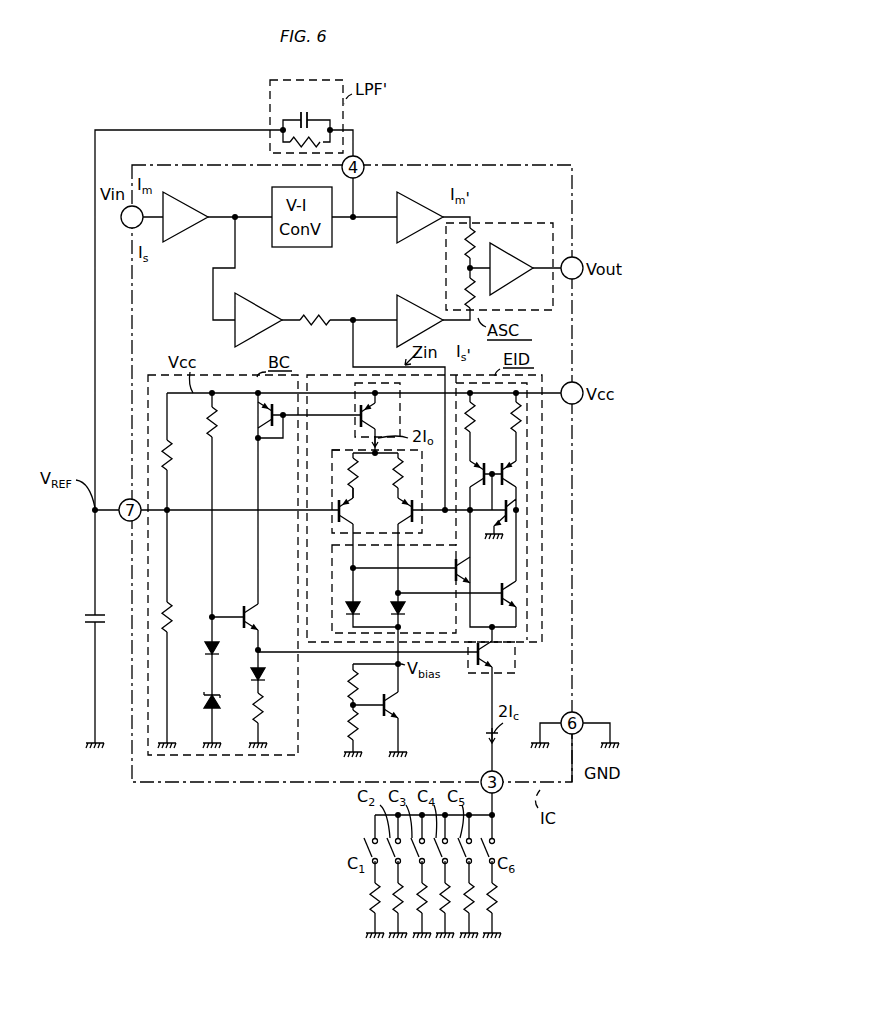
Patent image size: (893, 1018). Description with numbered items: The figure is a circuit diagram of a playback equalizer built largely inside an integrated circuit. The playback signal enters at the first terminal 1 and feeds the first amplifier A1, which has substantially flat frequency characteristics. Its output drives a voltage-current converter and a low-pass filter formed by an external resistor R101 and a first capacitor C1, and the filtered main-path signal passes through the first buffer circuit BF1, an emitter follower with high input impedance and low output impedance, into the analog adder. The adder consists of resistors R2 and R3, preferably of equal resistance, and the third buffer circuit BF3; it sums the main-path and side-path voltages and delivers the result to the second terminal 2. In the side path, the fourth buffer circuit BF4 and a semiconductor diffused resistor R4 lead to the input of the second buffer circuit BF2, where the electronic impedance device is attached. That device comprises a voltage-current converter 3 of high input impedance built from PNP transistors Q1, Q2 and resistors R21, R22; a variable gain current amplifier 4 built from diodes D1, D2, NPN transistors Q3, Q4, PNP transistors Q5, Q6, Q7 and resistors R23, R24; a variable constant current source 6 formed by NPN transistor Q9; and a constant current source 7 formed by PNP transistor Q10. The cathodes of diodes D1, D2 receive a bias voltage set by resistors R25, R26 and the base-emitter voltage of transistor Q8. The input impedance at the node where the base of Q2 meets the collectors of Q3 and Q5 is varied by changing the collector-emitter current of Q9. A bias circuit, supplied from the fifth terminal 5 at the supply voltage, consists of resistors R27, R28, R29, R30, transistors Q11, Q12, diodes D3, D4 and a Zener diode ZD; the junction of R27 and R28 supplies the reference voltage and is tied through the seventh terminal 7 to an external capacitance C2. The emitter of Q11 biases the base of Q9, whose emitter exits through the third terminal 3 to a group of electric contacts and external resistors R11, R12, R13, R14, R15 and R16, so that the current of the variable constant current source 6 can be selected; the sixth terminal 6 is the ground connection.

The first terminal 1 is at (132, 217).
The second terminal 2 is at (572, 268).
The voltage-current converter 3 is at (330, 450).
The variable gain current amplifier 4 is at (332, 548).
The fifth terminal 5 is at (572, 393).
The variable constant current source 6 is at (515, 656).
The constant current source 7 is at (401, 410).
The first amplifier A1 is at (185, 217).
The first buffer circuit BF1 is at (418, 205).
The second buffer circuit BF2 is at (397, 310).
The third buffer circuit BF3 is at (510, 260).
The fourth buffer circuit BF4 is at (260, 308).
The first capacitor C1 is at (303, 109).
The external capacitance C2 is at (82, 626).
The external resistor R101 is at (292, 141).
The semiconductor diffused resistor R2 is at (467, 242).
The semiconductor diffused resistor R3 is at (467, 290).
The semiconductor diffused resistor R4 is at (315, 310).
The semiconductor diffused resistor R21 is at (350, 474).
The semiconductor diffused resistor R22 is at (375, 475).
The semiconductor diffused resistor R23 is at (522, 450).
The semiconductor diffused resistor R24 is at (483, 415).
The semiconductor diffused resistor R25 is at (338, 685).
The semiconductor diffused resistor R26 is at (338, 727).
The semiconductor diffused resistor R27 is at (180, 456).
The semiconductor diffused resistor R28 is at (180, 617).
The semiconductor diffused resistor R29 is at (197, 422).
The semiconductor diffused resistor R30 is at (272, 708).
The external resistor R11 is at (364, 898).
The external resistor R12 is at (396, 905).
The external resistor R13 is at (420, 905).
The external resistor R14 is at (443, 905).
The external resistor R15 is at (467, 905).
The external resistor R16 is at (505, 898).
The PNP-type transistor Q1 is at (356, 507).
The PNP-type transistor Q2 is at (406, 519).
The NPN-type transistor Q3 is at (473, 571).
The NPN-type transistor Q4 is at (497, 600).
The PNP-type transistor Q5 is at (488, 468).
The PNP-type transistor Q6 is at (516, 479).
The PNP-type transistor Q7 is at (508, 505).
The transistor Q8 is at (403, 705).
The NPN-type transistor Q9 is at (485, 650).
The PNP-type transistor Q10 is at (365, 410).
The transistor Q11 is at (266, 616).
The transistor Q12 is at (248, 415).
The diode D1 is at (360, 598).
The diode D2 is at (409, 615).
The diode D3 is at (223, 655).
The diode D4 is at (268, 679).
The Zener diode ZD is at (196, 703).